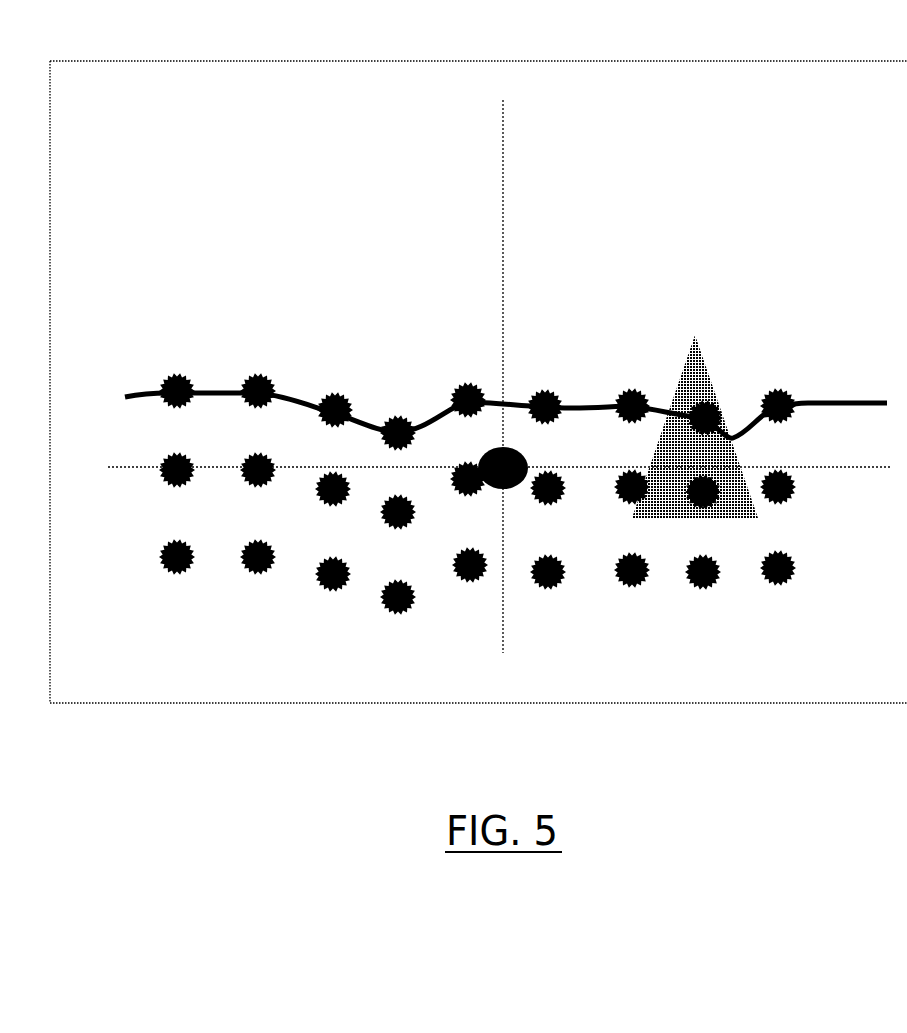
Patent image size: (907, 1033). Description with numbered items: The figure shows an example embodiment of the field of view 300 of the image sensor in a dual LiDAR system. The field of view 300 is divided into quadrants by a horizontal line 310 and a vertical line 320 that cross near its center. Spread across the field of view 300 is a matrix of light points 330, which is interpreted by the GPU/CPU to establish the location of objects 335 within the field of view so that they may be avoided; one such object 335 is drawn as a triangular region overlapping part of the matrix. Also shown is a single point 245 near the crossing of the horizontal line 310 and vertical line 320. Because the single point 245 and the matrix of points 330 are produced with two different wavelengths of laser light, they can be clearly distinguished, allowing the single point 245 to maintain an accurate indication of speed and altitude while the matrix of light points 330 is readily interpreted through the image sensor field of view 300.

The field of view 300 is at (212, 60).
The horizontal line 310 is at (146, 467).
The vertical line 320 is at (502, 198).
The matrix of light points 330 is at (397, 428).
The single point 245 is at (510, 446).
The object 335 is at (700, 393).